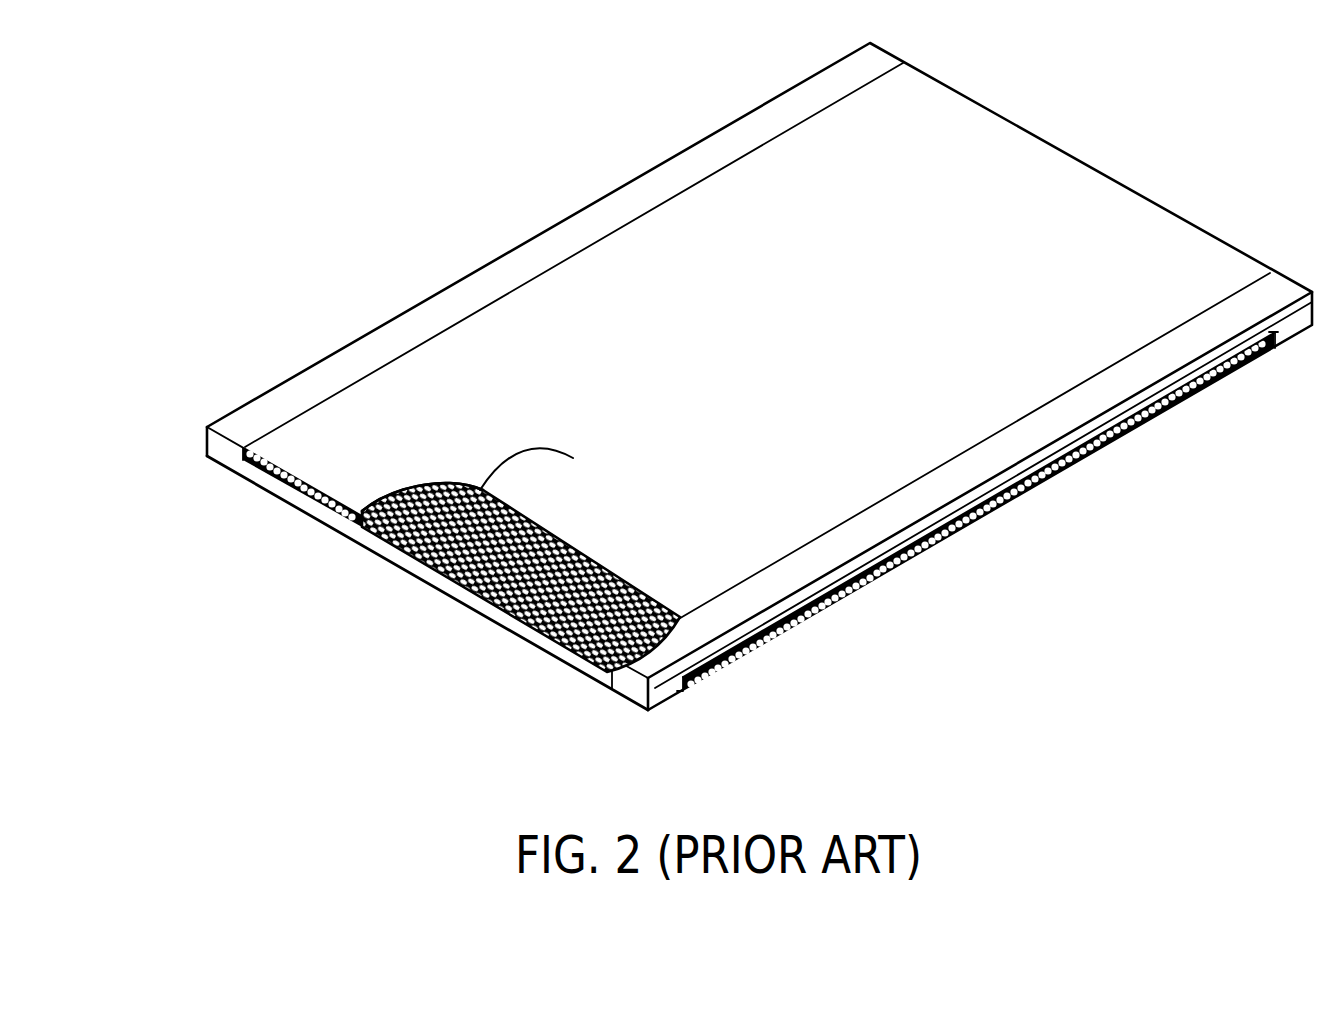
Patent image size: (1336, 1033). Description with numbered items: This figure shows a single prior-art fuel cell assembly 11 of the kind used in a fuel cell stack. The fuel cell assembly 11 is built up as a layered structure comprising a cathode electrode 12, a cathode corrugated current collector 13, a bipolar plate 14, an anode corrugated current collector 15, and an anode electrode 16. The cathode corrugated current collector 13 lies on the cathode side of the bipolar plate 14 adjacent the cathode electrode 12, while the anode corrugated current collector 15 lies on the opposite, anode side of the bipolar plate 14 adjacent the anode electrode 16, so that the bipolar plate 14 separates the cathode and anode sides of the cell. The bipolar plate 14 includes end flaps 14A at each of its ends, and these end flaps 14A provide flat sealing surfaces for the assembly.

The fuel cell assembly 11 is at (626, 164).
The cathode electrode 12 is at (1127, 430).
The cathode corrugated current collector 13 is at (978, 515).
The bipolar plate 14 is at (285, 497).
The end flap 14A is at (218, 447).
The anode corrugated current collector 15 is at (383, 565).
The anode electrode 16 is at (440, 583).